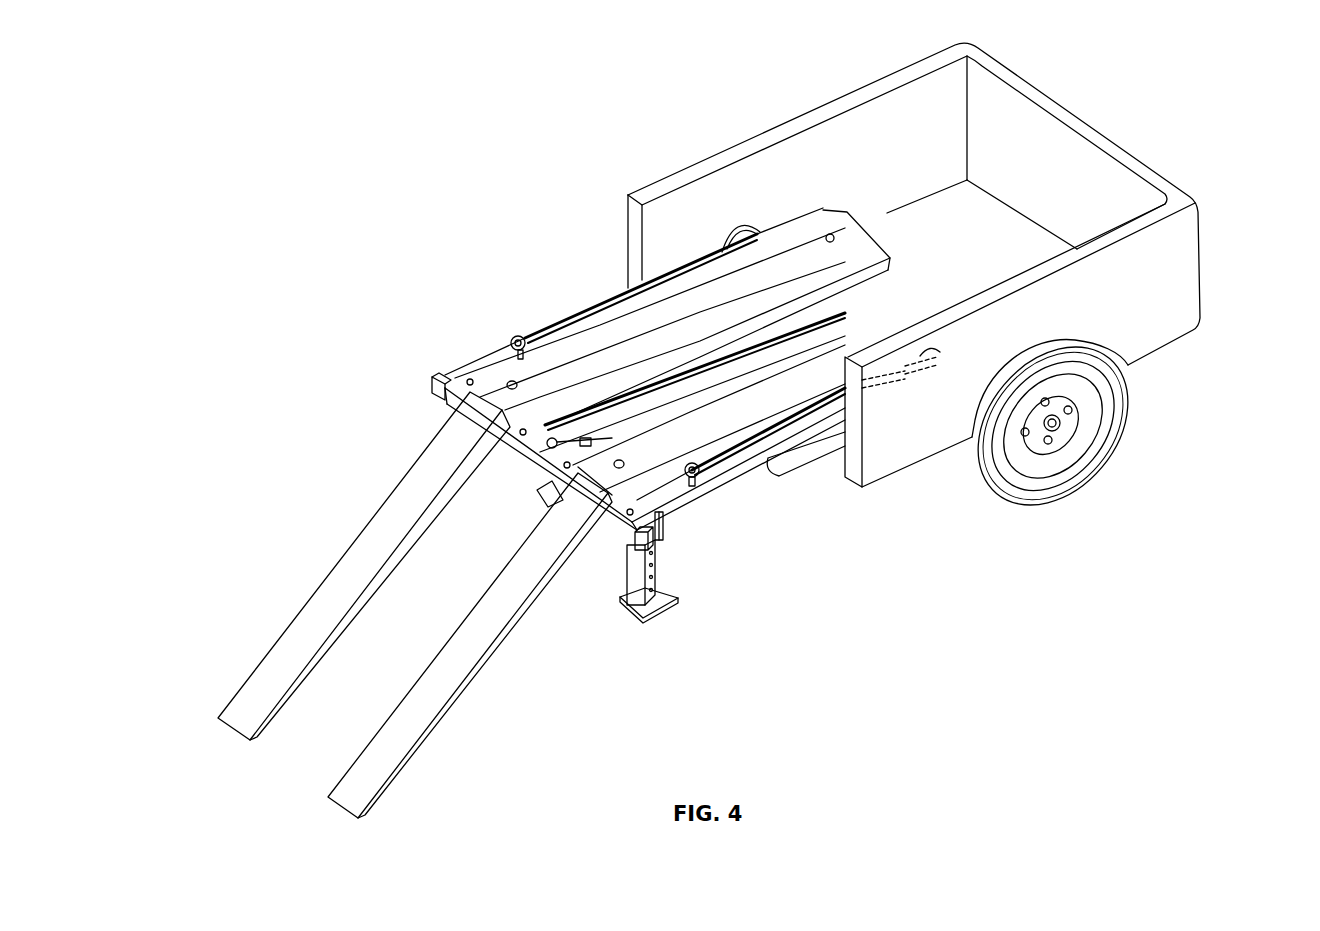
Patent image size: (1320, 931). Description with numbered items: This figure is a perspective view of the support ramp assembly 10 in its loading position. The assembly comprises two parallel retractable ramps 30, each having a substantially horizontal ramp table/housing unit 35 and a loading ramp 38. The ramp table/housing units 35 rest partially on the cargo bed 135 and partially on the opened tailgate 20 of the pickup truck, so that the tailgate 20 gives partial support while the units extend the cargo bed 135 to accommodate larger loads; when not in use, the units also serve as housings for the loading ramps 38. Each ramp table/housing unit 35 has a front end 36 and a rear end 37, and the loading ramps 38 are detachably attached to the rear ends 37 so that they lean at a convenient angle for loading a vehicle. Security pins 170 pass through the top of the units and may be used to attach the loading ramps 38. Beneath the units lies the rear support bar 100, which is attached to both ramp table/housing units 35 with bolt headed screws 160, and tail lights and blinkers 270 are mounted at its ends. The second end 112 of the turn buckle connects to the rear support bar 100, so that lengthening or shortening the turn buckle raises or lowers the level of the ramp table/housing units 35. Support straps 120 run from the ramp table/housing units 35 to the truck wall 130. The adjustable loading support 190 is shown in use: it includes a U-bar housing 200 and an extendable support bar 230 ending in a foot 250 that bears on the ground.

The support ramp assembly 10 is at (340, 134).
The tailgate 20 is at (793, 463).
The retractable ramp 30 is at (421, 306).
The ramp table/housing unit 35 is at (698, 305).
The front end 36 is at (593, 463).
The rear end 37 is at (582, 328).
The loading ramp 38 is at (302, 662).
The rear support bar 100 is at (518, 452).
The second end of turn buckle 112 is at (550, 433).
The support strap 120 is at (623, 287).
The truck wall 130 is at (1197, 282).
The cargo bed 135 is at (1010, 235).
The bolt headed screw 160 is at (466, 380).
The security pin 170 is at (510, 382).
The adjustable loading support 190 is at (672, 610).
The U-bar housing 200 is at (665, 515).
The extendable support bar 230 is at (658, 567).
The foot 250 is at (668, 602).
The tail lights and blinkers 270 is at (430, 385).